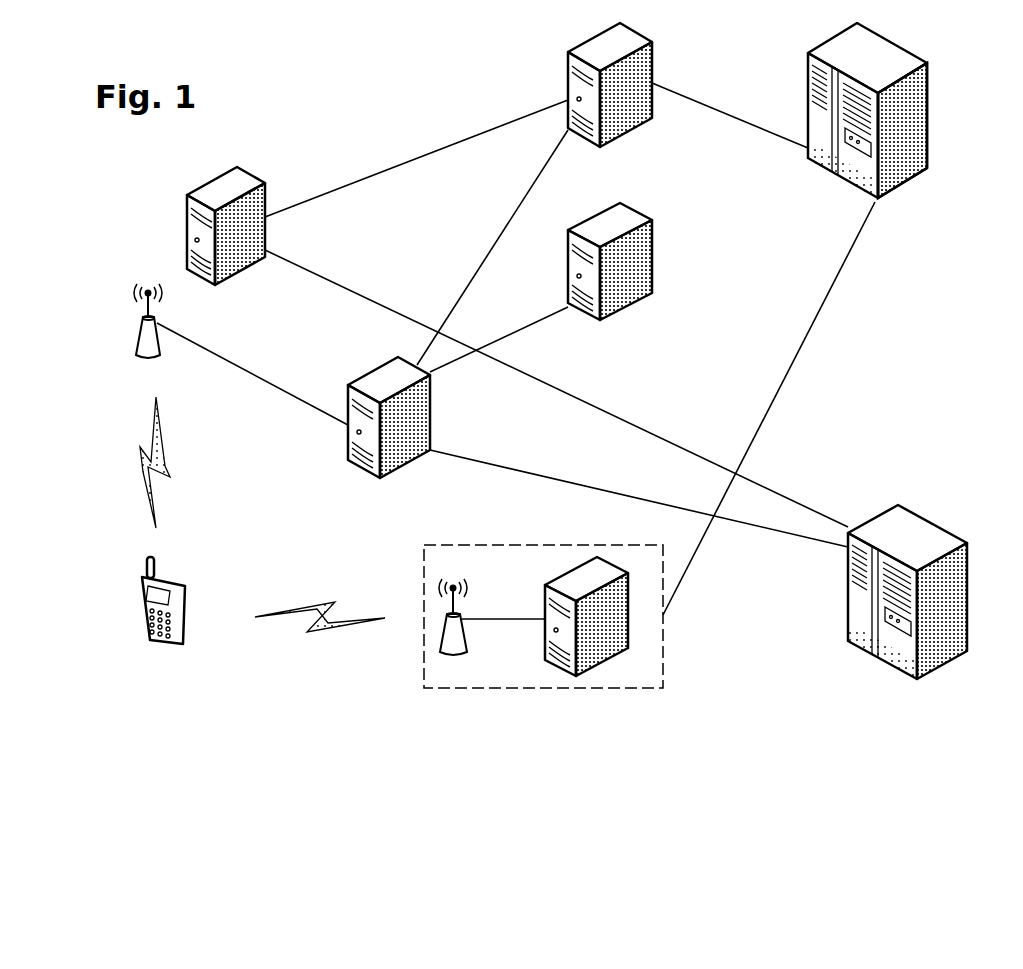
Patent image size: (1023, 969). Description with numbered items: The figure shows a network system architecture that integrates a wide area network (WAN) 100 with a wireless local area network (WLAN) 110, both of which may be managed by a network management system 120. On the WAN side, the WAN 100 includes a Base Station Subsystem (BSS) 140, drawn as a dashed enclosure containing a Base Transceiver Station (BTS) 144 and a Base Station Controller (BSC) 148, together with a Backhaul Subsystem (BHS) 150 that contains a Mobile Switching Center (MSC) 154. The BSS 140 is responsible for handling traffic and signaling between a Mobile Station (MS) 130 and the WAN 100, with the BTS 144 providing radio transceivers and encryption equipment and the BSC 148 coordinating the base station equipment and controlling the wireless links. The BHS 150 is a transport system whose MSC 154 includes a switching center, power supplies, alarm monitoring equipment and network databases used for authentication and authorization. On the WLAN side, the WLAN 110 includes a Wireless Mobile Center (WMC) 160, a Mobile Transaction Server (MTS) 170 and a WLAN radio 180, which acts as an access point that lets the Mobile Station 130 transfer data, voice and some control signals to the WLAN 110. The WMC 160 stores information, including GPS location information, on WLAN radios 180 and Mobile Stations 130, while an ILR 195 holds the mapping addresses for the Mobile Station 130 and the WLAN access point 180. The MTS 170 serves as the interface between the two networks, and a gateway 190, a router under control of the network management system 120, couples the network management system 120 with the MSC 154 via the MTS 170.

The wide area network 100 is at (338, 676).
The wireless local area network 110 is at (215, 462).
The network management system 120 is at (967, 588).
The Mobile Station 130 is at (178, 650).
The Base Station Subsystem 140 is at (515, 690).
The Base Transceiver Station 144 is at (450, 657).
The Base Station Controller 148 is at (603, 663).
The Backhaul Subsystem 150 is at (914, 277).
The Mobile Switching Center 154 is at (927, 155).
The Wireless Mobile Center 160 is at (377, 363).
The Mobile Transaction Server 170 is at (265, 183).
The WLAN radio 180 is at (135, 353).
The gateway 190 is at (578, 48).
The ILR 195 is at (652, 260).